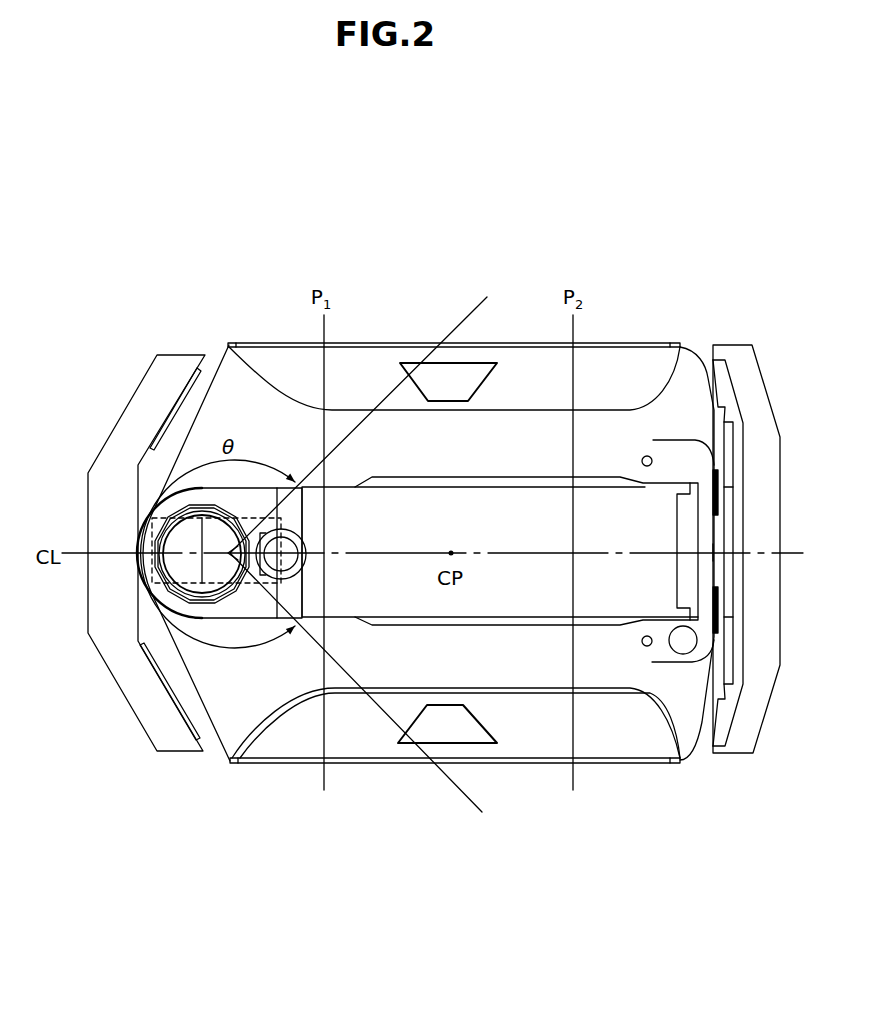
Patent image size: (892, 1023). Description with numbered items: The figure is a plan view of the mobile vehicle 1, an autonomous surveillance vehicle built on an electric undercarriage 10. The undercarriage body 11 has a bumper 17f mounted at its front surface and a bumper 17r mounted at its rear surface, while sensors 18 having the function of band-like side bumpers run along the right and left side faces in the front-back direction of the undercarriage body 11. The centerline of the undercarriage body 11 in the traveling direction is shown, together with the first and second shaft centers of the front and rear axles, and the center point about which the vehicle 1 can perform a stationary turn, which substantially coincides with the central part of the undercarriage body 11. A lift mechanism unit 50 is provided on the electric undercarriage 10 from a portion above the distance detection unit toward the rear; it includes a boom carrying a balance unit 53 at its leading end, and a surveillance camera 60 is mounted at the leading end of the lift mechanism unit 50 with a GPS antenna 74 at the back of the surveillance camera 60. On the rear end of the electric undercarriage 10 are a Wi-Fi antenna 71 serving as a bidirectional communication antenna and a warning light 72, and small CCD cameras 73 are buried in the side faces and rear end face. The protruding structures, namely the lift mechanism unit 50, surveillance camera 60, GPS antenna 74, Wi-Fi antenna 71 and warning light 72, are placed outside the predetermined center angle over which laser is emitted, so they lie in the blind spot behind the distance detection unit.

The mobile vehicle 1 is at (428, 222).
The electric undercarriage 10 is at (371, 334).
The undercarriage body 11 is at (518, 675).
The bumper 17f is at (127, 705).
The bumper 17r is at (765, 397).
The sensors 18 is at (507, 342).
The lift mechanism unit 50 is at (388, 628).
The balance unit 53 is at (156, 591).
The surveillance camera 60 is at (174, 511).
The Wi-Fi antenna 71 is at (647, 456).
The warning light 72 is at (697, 645).
The small CCD cameras 73 is at (716, 549).
The GPS antenna 74 is at (270, 584).